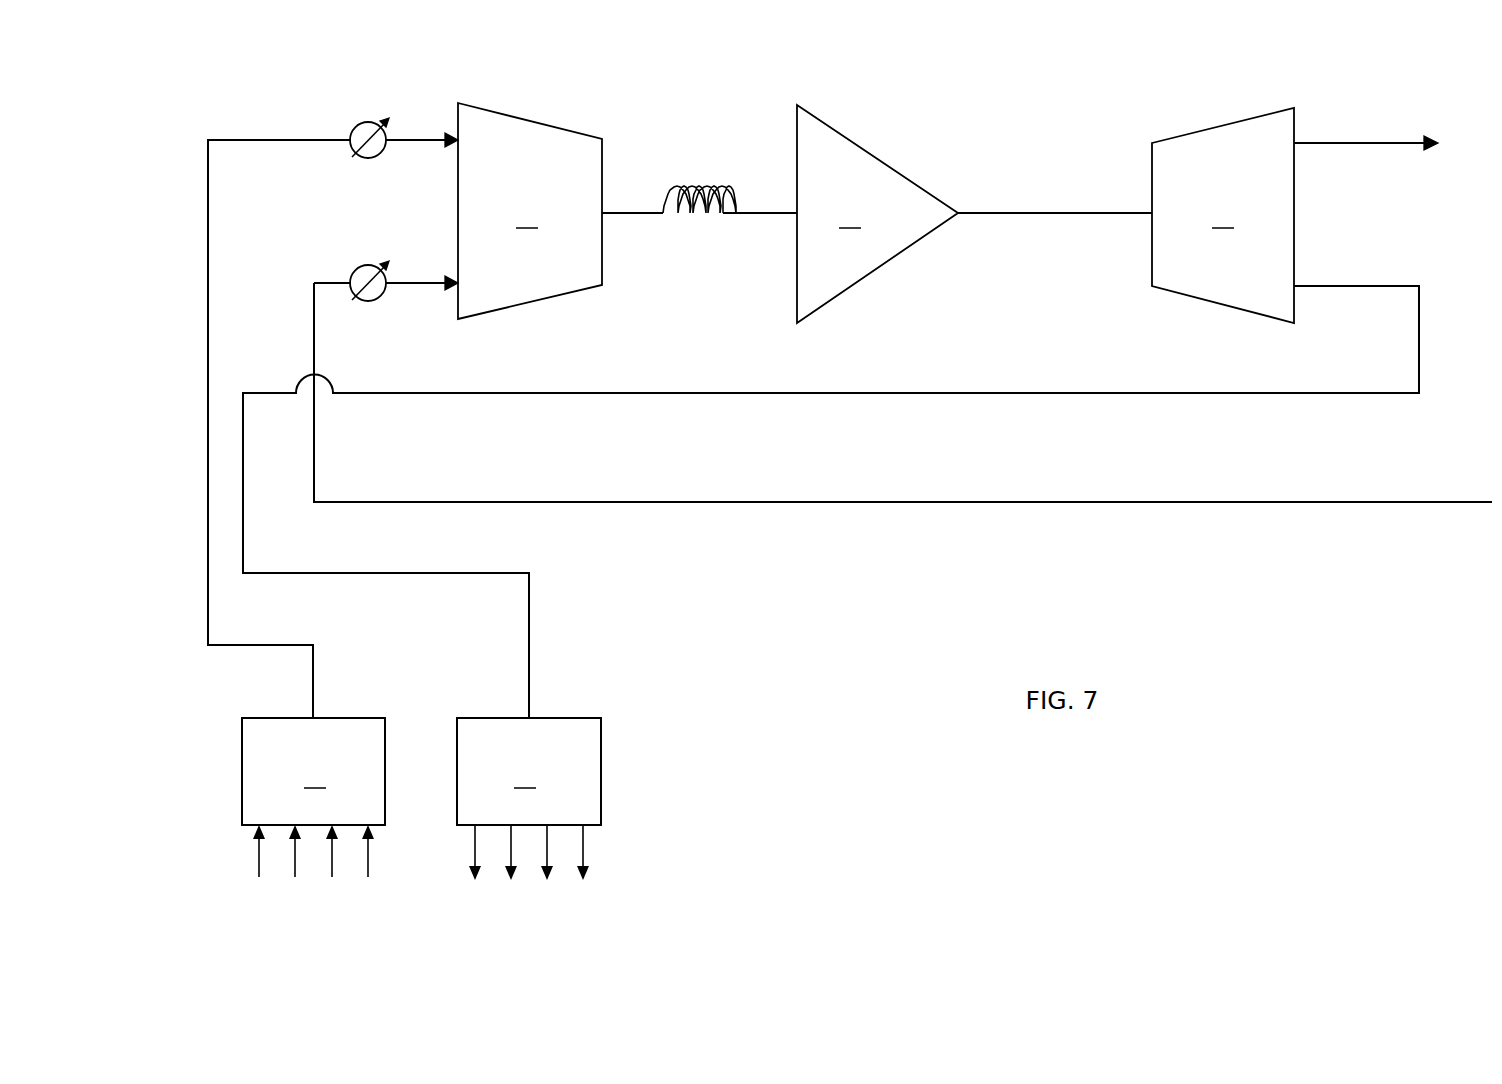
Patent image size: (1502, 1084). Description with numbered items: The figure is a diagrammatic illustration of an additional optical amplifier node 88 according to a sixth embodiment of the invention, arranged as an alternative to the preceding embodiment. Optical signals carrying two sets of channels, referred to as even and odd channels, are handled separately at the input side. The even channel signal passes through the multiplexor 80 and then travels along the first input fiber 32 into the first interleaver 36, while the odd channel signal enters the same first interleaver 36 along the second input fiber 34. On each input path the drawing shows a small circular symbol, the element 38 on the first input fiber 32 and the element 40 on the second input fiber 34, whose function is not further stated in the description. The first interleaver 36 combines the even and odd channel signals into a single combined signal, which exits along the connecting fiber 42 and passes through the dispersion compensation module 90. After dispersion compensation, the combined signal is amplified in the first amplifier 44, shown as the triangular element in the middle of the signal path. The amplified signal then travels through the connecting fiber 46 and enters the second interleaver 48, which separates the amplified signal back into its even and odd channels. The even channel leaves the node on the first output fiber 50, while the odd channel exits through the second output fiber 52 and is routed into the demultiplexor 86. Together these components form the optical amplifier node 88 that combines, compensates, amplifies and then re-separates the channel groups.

The first input fiber 32 is at (423, 138).
The second input fiber 34 is at (333, 283).
The first interleaver 36 is at (530, 211).
The first control valve 38 is at (372, 122).
The second control valve 40 is at (372, 267).
The connecting fiber 42 is at (762, 212).
The first amplifier 44 is at (877, 214).
The connecting fiber 46 is at (1082, 213).
The second interleaver 48 is at (1223, 215).
The first output fiber 50 is at (1350, 140).
The second output fiber 52 is at (1358, 286).
The multiplexor 80 is at (313, 797).
The demultiplexor 86 is at (529, 799).
The optical amplifier node 88 is at (785, 622).
The dispersion compensation module 90 is at (693, 213).